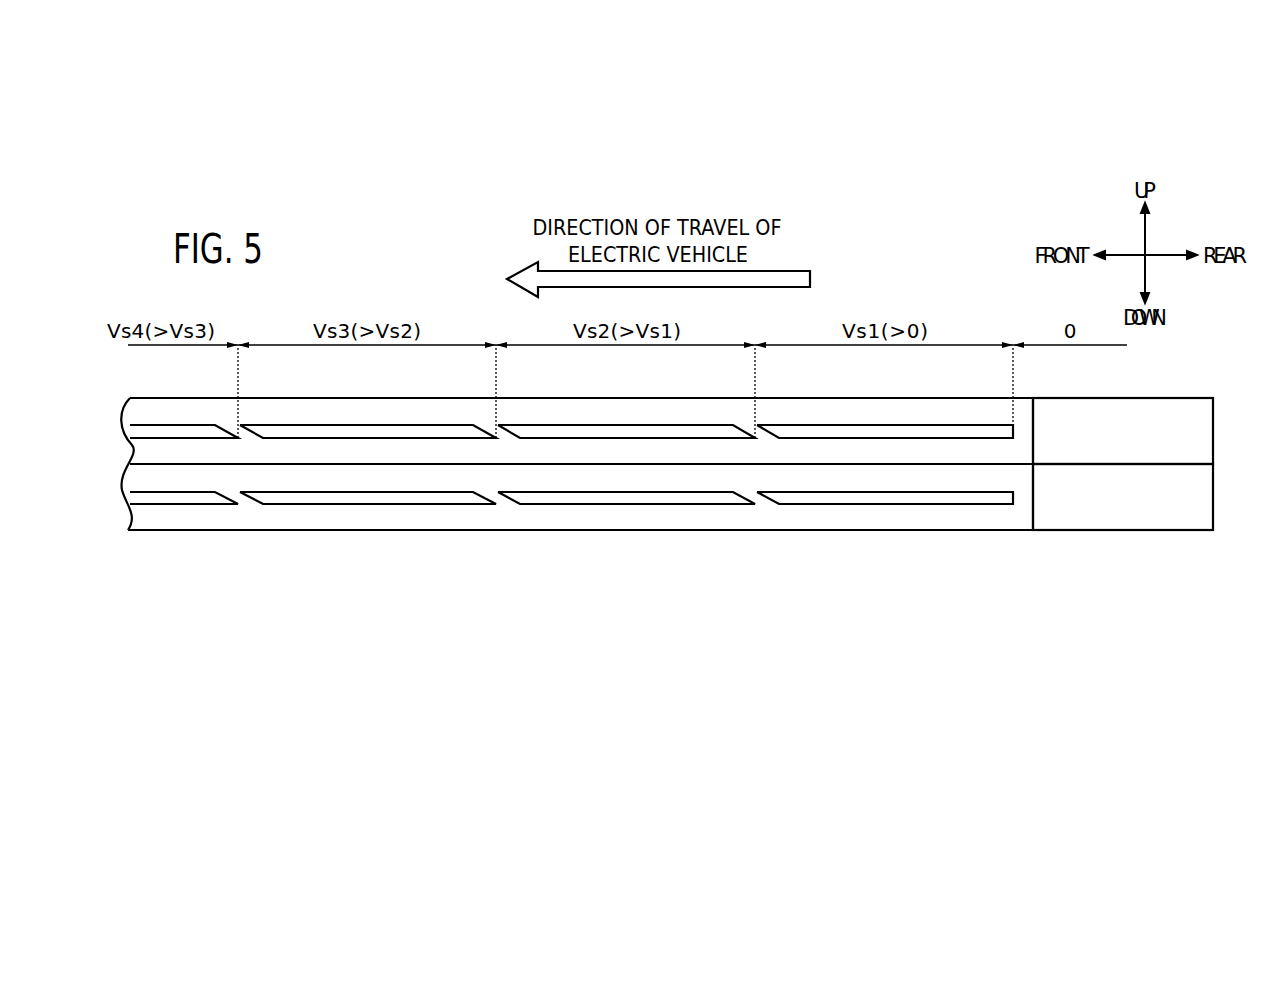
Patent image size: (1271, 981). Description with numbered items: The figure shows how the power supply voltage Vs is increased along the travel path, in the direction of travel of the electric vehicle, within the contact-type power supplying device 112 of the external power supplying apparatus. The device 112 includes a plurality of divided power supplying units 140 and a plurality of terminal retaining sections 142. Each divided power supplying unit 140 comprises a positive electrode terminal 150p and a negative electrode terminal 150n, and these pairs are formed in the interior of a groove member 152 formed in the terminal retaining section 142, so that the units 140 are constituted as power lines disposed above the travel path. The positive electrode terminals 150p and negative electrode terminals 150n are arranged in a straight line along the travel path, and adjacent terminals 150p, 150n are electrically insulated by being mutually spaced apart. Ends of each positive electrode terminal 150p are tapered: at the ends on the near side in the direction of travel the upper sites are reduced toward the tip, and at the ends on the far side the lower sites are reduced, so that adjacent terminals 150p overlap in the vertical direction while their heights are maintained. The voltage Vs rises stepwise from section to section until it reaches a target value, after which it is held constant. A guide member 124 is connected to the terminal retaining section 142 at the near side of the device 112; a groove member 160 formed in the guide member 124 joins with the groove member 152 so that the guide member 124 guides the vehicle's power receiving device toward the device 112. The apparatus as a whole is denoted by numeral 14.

The stator 14 is at (961, 303).
The contact-type power supplying device 112 is at (1014, 560).
The guide member 124 is at (1085, 524).
The divided power supplying unit 140 is at (120, 587).
The terminal retaining section 142 is at (965, 408).
The negative electrode terminal 150n is at (160, 500).
The positive electrode terminal 150p is at (173, 433).
The groove member 152 is at (789, 464).
The groove member 160 is at (1148, 466).